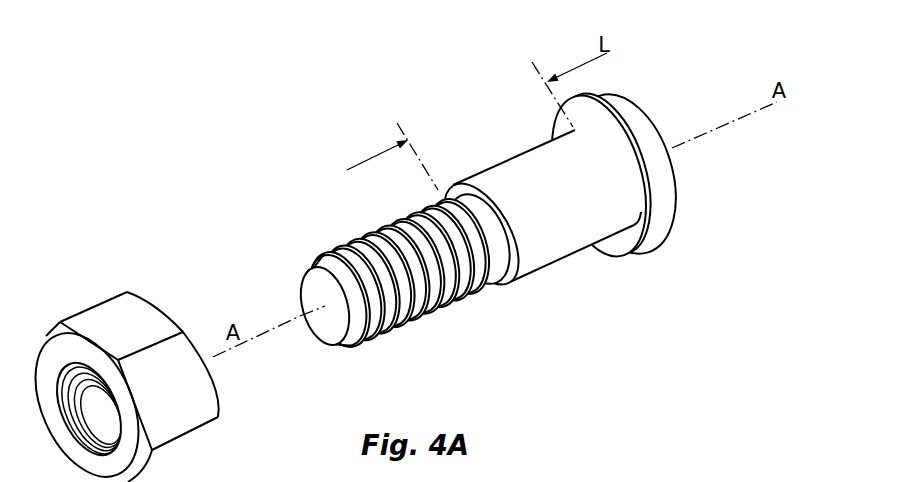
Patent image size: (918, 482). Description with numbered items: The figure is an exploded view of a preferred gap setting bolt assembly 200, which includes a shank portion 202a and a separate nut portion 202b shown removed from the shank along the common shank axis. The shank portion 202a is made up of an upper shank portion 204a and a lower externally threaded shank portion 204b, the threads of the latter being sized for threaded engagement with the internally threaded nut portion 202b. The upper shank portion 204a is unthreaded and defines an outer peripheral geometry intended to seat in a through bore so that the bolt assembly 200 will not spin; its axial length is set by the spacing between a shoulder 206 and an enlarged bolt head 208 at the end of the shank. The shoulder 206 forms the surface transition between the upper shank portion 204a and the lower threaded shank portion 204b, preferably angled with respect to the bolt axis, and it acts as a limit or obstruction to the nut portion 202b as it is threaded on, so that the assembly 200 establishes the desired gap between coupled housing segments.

The gap setting bolt assembly 200 is at (390, 30).
The shank portion 202a is at (485, 170).
The nut portion 202b is at (117, 312).
The upper shank portion 204a is at (563, 240).
The lower externally threaded shank portion 204b is at (432, 313).
The shoulder 206 is at (497, 281).
The enlarged bolt head 208 is at (647, 143).